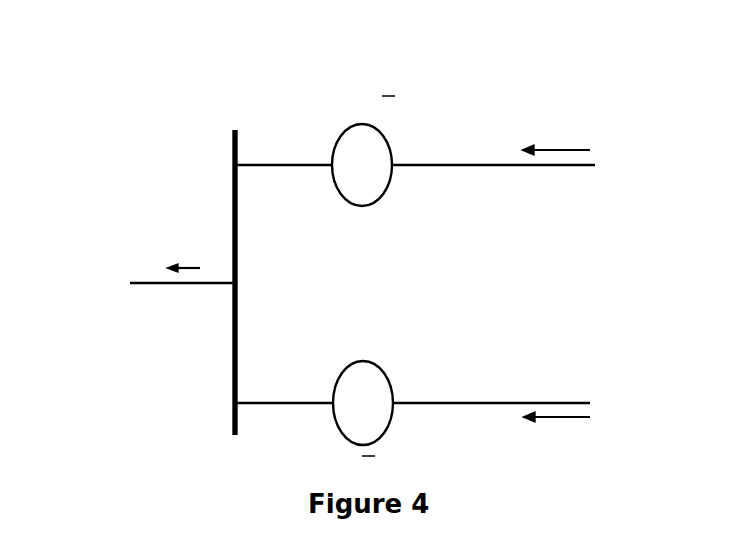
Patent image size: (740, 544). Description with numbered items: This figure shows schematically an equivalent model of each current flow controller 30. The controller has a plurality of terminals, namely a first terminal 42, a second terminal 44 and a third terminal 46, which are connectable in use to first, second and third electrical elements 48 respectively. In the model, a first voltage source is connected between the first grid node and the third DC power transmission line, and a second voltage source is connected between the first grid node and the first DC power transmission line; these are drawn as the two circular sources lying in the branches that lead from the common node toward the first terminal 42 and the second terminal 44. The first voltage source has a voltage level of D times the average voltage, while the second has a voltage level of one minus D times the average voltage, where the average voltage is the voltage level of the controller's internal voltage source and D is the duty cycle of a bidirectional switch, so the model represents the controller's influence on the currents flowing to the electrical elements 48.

The current flow controller 30 is at (260, 112).
The first terminal 42 is at (465, 398).
The second terminal 44 is at (458, 170).
The third terminal 46 is at (230, 280).
The electrical element 48 is at (123, 283).